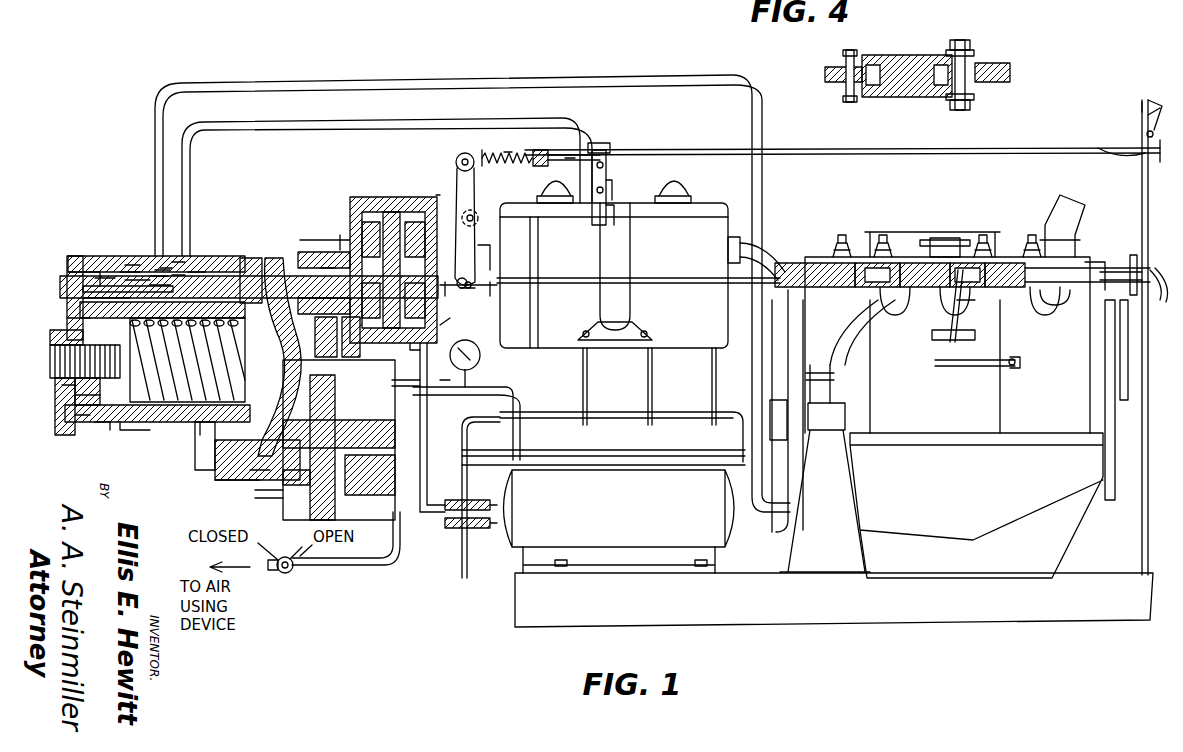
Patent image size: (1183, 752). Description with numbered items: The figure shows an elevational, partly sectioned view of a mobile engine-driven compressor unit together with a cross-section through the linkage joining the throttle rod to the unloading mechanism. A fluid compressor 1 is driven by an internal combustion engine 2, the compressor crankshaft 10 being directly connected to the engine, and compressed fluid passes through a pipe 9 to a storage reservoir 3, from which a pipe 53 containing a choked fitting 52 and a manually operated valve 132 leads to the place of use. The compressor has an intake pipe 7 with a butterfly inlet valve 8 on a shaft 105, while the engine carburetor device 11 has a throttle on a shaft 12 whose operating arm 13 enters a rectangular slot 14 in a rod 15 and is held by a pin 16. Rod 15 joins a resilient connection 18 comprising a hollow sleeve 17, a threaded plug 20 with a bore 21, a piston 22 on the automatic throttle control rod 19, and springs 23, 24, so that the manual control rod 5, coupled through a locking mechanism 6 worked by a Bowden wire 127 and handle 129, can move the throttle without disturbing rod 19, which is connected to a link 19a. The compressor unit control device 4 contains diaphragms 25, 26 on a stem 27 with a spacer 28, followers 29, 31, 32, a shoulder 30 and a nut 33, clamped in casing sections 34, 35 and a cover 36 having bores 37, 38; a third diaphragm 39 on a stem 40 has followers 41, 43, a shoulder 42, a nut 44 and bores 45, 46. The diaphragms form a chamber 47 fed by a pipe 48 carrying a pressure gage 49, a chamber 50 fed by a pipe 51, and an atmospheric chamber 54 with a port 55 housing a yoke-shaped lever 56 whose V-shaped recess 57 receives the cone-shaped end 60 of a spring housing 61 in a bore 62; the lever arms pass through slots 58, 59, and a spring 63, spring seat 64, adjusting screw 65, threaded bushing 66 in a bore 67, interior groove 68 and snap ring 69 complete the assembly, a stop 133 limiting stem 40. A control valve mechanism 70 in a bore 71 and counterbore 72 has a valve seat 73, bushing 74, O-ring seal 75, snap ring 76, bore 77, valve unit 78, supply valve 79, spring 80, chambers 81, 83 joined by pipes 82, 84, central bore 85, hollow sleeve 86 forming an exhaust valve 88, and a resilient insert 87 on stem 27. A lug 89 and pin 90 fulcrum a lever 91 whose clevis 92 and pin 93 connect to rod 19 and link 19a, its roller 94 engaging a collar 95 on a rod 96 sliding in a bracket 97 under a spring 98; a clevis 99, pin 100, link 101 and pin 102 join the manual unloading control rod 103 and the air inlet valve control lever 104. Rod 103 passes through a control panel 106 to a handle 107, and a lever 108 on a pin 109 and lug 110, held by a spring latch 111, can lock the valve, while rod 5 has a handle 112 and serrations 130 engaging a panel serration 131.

In FIG. 1, the fluid compressor 1 is at (723, 199).
In FIG. 1, the internal combustion engine 2 is at (801, 335).
In FIG. 1, the storage reservoir 3 is at (749, 541).
In FIG. 1, the compressor unit control device 4 is at (448, 306).
In FIG. 1, the manual control rod 5 is at (1110, 278).
In FIG. 1, the locking mechanism 6 is at (1030, 258).
In FIG. 1, the intake pipe 7 is at (622, 262).
In FIG. 1, the inlet valve 8 is at (610, 205).
In FIG. 1, the pipe 9 is at (541, 262).
In FIG. 1, the crankshaft 10 is at (800, 397).
In FIG. 1, the carburetor device 11 is at (970, 357).
In FIG. 1, the shaft 12 is at (945, 337).
In FIG. 1, the operating arm 13 is at (968, 325).
In FIG. 1, the rectangular slot 14 is at (940, 255).
In FIG. 1, the rod 15 is at (935, 262).
In FIG. 1, the pin 16 is at (972, 268).
In FIG. 1, the hollow sleeve 17 is at (838, 250).
In FIG. 1, the resilient connection 18 is at (835, 262).
In FIG. 1, the automatic throttle control rod 19 is at (690, 280).
In FIG. 4, the automatic throttle control rod 19 is at (1012, 80).
In FIG. 1, the link 19a is at (466, 290).
In FIG. 4, the link 19a is at (920, 84).
In FIG. 1, the threaded plug 20 is at (772, 250).
In FIG. 1, the bore 21 is at (778, 290).
In FIG. 1, the piston 22 is at (850, 308).
In FIG. 1, the spring 23 is at (808, 262).
In FIG. 1, the spring 24 is at (892, 232).
In FIG. 1, the diaphragm 25 is at (328, 312).
In FIG. 1, the diaphragm 26 is at (430, 198).
In FIG. 1, the stem 27 is at (327, 268).
In FIG. 4, the stem 27 is at (830, 82).
In FIG. 1, the spacer 28 is at (352, 258).
In FIG. 1, the diaphragm follower 29 is at (310, 240).
In FIG. 1, the shoulder 30 is at (305, 262).
In FIG. 1, the diaphragm follower 31 is at (392, 225).
In FIG. 1, the diaphragm follower 32 is at (420, 232).
In FIG. 1, the nut 33 is at (426, 352).
In FIG. 1, the casing section 34 is at (318, 252).
In FIG. 1, the casing section 35 is at (380, 212).
In FIG. 1, the cover 36 is at (470, 384).
In FIG. 1, the bore 37 is at (447, 326).
In FIG. 1, the bore 38 is at (220, 258).
In FIG. 1, the diaphragm 39 is at (326, 500).
In FIG. 1, the stem 40 is at (198, 440).
In FIG. 1, the diaphragm follower 41 is at (300, 498).
In FIG. 1, the shoulder 42 is at (296, 478).
In FIG. 1, the diaphragm follower 43 is at (382, 470).
In FIG. 1, the nut 44 is at (382, 450).
In FIG. 1, the bore 45 is at (424, 452).
In FIG. 1, the bore 46 is at (204, 427).
In FIG. 1, the chamber 47 is at (346, 235).
In FIG. 1, the pipe 48 is at (445, 388).
In FIG. 1, the pressure gage 49 is at (480, 358).
In FIG. 1, the chamber 50 is at (478, 245).
In FIG. 1, the pipe 51 is at (428, 466).
In FIG. 1, the choked fitting 52 is at (465, 530).
In FIG. 1, the pipe 53 is at (478, 503).
In FIG. 1, the chamber 54 is at (230, 480).
In FIG. 1, the port 55 is at (258, 480).
In FIG. 1, the yoke-shaped lever 56 is at (256, 275).
In FIG. 1, the V-shaped recess 57 is at (176, 418).
In FIG. 1, the slot 58 is at (258, 262).
In FIG. 1, the slot 59 is at (225, 465).
In FIG. 1, the cone-shaped end 60 is at (131, 420).
In FIG. 1, the spring housing 61 is at (135, 427).
In FIG. 1, the bore 62 is at (100, 427).
In FIG. 1, the spring 63 is at (75, 318).
In FIG. 1, the spring seat 64 is at (65, 335).
In FIG. 1, the adjusting screw 65 is at (55, 380).
In FIG. 1, the threaded bushing 66 is at (70, 406).
In FIG. 1, the bore 67 is at (65, 393).
In FIG. 1, the interior groove 68 is at (95, 417).
In FIG. 1, the snap ring 69 is at (80, 420).
In FIG. 1, the control valve mechanism 70 is at (128, 272).
In FIG. 1, the bore 71 is at (178, 275).
In FIG. 1, the counterbore 72 is at (158, 276).
In FIG. 1, the valve seat 73 is at (160, 270).
In FIG. 1, the bushing 74 is at (130, 265).
In FIG. 1, the O-ring seal 75 is at (90, 270).
In FIG. 1, the snap ring 76 is at (68, 268).
In FIG. 1, the bore 77 is at (68, 278).
In FIG. 1, the valve unit 78 is at (135, 280).
In FIG. 1, the supply valve 79 is at (160, 285).
In FIG. 1, the spring 80 is at (100, 278).
In FIG. 1, the chamber 81 is at (90, 300).
In FIG. 1, the pipe 82 is at (338, 84).
In FIG. 1, the chamber 83 is at (195, 272).
In FIG. 1, the pipe 84 is at (338, 124).
In FIG. 1, the central bore 85 is at (85, 290).
In FIG. 1, the hollow sleeve 86 is at (165, 268).
In FIG. 1, the resilient insert 87 is at (205, 280).
In FIG. 1, the exhaust valve 88 is at (178, 262).
In FIG. 1, the lug 89 is at (438, 195).
In FIG. 1, the pin 90 is at (473, 217).
In FIG. 1, the lever 91 is at (470, 225).
In FIG. 4, the lever 91 is at (952, 50).
In FIG. 1, the clevis 92 is at (470, 282).
In FIG. 4, the clevis 92 is at (984, 55).
In FIG. 1, the pin 93 is at (470, 285).
In FIG. 4, the pin 93 is at (968, 45).
In FIG. 1, the roller 94 is at (462, 156).
In FIG. 1, the collar 95 is at (487, 150).
In FIG. 1, the rod 96 is at (498, 158).
In FIG. 1, the bracket 97 is at (541, 150).
In FIG. 1, the spring 98 is at (508, 152).
In FIG. 1, the clevis 99 is at (570, 158).
In FIG. 1, the pin 100 is at (552, 158).
In FIG. 1, the link 101 is at (596, 160).
In FIG. 1, the pin 102 is at (600, 165).
In FIG. 1, the manual unloading control rod 103 is at (826, 153).
In FIG. 1, the air inlet valve control lever 104 is at (612, 186).
In FIG. 1, the shaft 105 is at (606, 190).
In FIG. 1, the control panel 106 is at (1142, 176).
In FIG. 1, the handle 107 is at (1098, 150).
In FIG. 1, the lever 108 is at (1142, 106).
In FIG. 1, the pin 109 is at (1143, 135).
In FIG. 1, the lug 110 is at (1142, 118).
In FIG. 1, the spring latch 111 is at (1150, 100).
In FIG. 1, the handle 112 is at (1095, 270).
In FIG. 1, the Bowden wire 127 is at (1066, 300).
In FIG. 1, the handle 129 is at (1145, 300).
In FIG. 1, the serrations 130 is at (1135, 265).
In FIG. 1, the serration 131 is at (1137, 275).
In FIG. 1, the manually operated valve 132 is at (290, 573).
In FIG. 1, the stop 133 is at (262, 498).